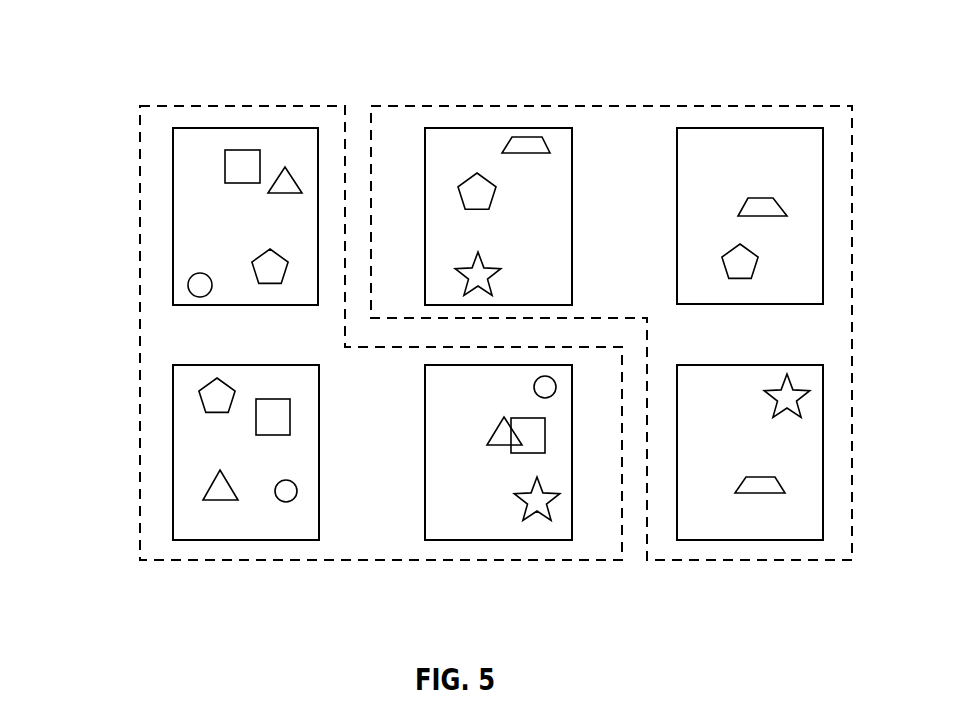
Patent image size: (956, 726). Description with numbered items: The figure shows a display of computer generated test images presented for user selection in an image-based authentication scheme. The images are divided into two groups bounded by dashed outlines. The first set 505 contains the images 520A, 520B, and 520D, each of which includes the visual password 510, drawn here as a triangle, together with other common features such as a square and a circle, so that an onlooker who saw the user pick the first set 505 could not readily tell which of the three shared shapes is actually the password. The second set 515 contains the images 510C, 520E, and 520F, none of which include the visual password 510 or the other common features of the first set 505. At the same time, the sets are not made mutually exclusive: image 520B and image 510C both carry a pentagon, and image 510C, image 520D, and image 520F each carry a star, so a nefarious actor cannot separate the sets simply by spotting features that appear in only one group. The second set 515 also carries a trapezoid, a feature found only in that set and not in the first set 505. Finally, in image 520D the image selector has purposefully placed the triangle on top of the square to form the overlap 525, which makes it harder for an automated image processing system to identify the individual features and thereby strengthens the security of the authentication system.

The first set 505 is at (218, 106).
The visual password 510 is at (285, 167).
The second set 515 is at (577, 106).
The image 520A is at (212, 168).
The image 520B is at (173, 460).
The image 510C is at (572, 258).
The image 520D is at (466, 499).
The image 520E is at (677, 197).
The image 520F is at (823, 459).
The overlap 525 is at (496, 458).